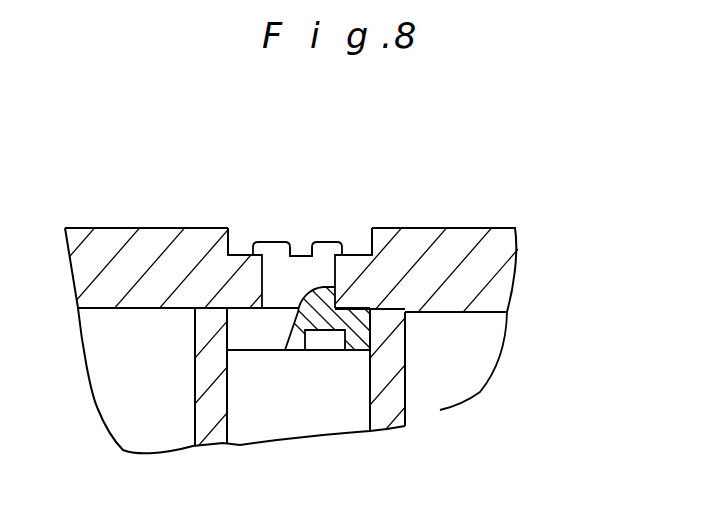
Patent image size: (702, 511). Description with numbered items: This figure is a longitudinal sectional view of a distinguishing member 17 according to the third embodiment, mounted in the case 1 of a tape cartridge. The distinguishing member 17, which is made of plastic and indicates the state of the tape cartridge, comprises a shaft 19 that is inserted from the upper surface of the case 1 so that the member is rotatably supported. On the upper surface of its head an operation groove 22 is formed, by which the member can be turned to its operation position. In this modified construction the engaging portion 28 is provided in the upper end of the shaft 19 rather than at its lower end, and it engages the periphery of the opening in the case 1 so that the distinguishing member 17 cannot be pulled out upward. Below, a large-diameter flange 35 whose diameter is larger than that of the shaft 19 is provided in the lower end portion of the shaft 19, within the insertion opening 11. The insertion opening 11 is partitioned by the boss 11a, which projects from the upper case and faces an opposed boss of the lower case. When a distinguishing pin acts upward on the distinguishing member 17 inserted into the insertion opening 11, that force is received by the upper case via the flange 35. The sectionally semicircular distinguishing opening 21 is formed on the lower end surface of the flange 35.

The case 1 is at (482, 228).
The distinguishing member 17 is at (252, 236).
The shaft 19 is at (272, 267).
The operation groove 22 is at (305, 253).
The engaging portion 28 is at (344, 243).
The distinguishing opening 21 is at (323, 345).
The large-diameter flange 35 is at (242, 342).
The insertion opening 11 is at (367, 418).
The boss 11a is at (407, 407).